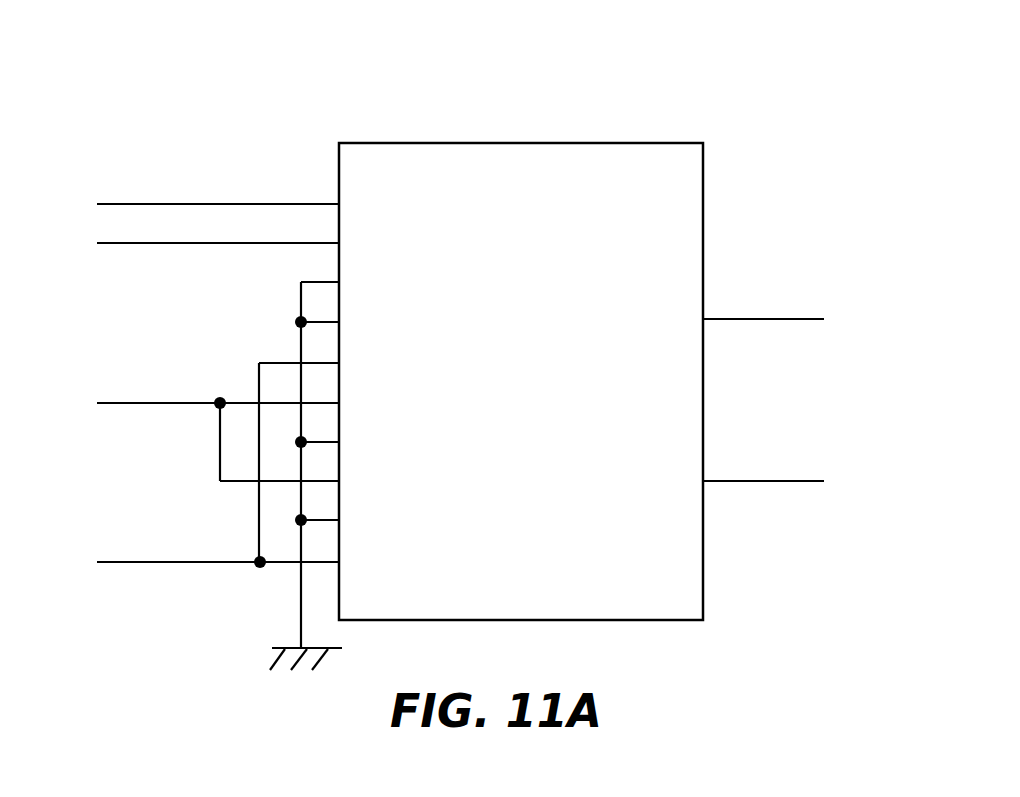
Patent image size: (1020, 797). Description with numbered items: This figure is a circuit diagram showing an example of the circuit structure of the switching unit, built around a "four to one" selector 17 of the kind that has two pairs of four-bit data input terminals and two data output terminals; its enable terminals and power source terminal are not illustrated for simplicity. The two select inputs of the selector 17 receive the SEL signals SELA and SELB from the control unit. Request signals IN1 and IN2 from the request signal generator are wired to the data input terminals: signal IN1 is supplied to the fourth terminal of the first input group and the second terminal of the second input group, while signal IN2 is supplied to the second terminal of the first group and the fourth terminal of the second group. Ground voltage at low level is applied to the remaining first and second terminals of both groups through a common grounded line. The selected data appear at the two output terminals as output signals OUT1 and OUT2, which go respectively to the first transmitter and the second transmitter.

The selector 17 is at (600, 88).
The SEL signal A SELA is at (186, 207).
The SEL signal B SELB is at (186, 246).
The request signal IN1 is at (188, 436).
The request signal IN2 is at (188, 470).
The output signal OUT1 is at (806, 320).
The output signal OUT2 is at (806, 481).